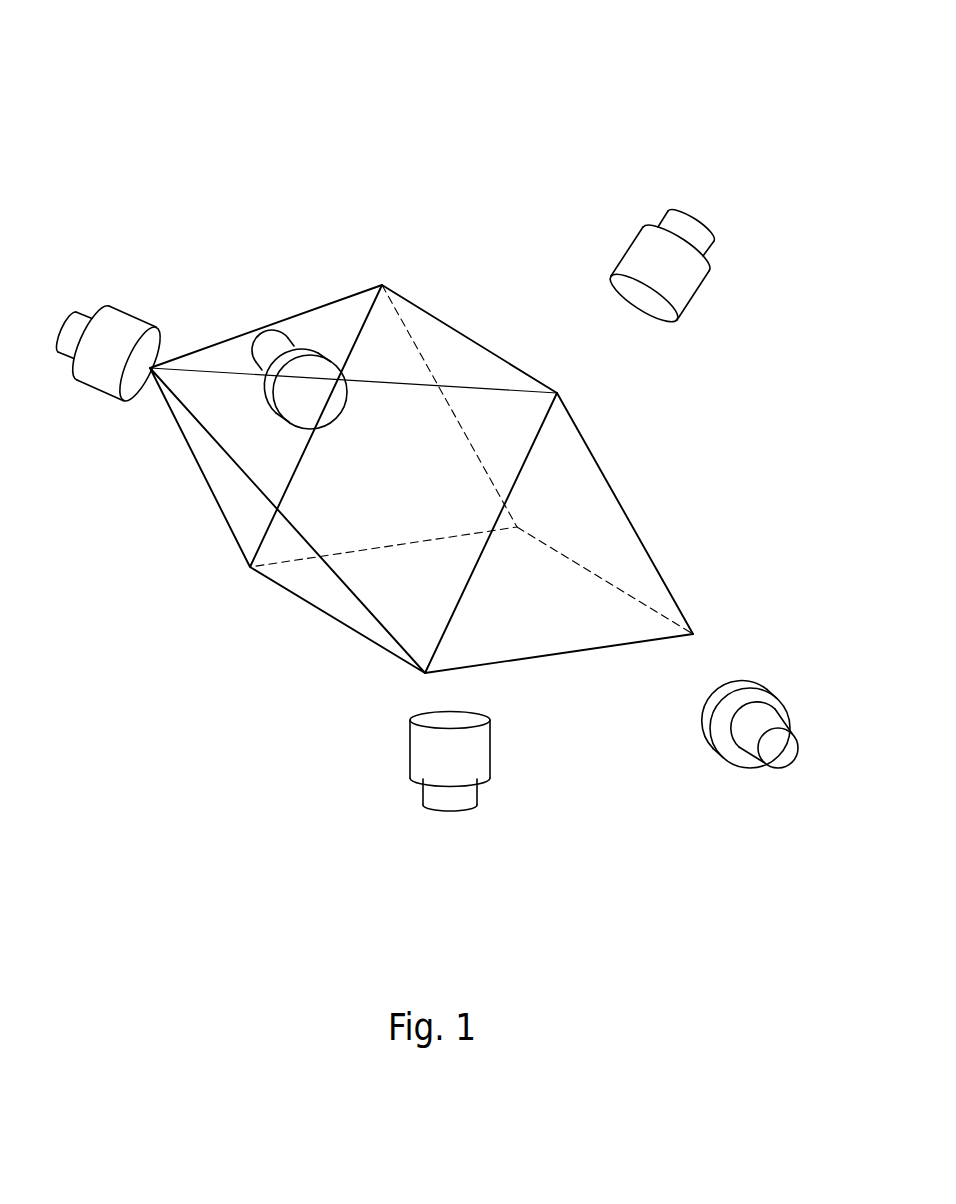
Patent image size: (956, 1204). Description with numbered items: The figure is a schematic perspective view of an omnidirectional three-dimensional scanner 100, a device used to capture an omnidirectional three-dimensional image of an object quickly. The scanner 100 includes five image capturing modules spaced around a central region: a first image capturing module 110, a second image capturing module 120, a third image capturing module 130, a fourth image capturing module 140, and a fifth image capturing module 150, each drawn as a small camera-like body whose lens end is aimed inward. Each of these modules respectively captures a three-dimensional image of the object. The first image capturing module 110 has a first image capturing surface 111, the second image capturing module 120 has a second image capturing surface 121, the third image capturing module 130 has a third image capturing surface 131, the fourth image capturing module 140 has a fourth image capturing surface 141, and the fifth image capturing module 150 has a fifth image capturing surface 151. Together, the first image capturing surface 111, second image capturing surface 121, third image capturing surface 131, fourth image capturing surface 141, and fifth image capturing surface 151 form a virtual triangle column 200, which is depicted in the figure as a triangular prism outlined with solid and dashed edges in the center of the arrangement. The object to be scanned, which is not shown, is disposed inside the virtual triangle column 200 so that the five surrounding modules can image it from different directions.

The omnidirectional three-dimensional scanner 100 is at (88, 49).
The virtual triangle column 200 is at (435, 315).
The first image capturing module 110 is at (680, 288).
The first image capturing surface 111 is at (588, 475).
The second image capturing module 120 is at (87, 317).
The second image capturing surface 121 is at (308, 503).
The third image capturing module 130 is at (430, 797).
The third image capturing surface 131 is at (533, 635).
The fourth image capturing module 140 is at (265, 342).
The fourth image capturing surface 141 is at (377, 360).
The fifth image capturing module 150 is at (753, 695).
The fifth image capturing surface 151 is at (588, 528).